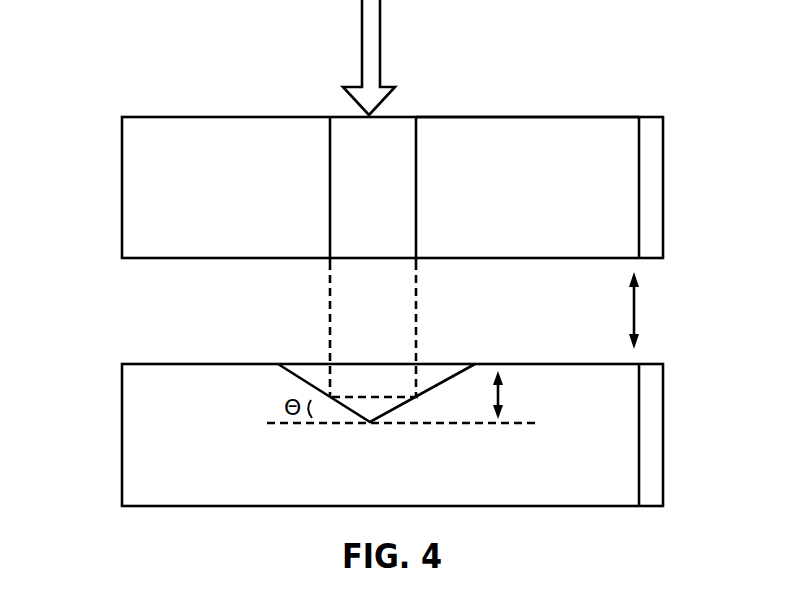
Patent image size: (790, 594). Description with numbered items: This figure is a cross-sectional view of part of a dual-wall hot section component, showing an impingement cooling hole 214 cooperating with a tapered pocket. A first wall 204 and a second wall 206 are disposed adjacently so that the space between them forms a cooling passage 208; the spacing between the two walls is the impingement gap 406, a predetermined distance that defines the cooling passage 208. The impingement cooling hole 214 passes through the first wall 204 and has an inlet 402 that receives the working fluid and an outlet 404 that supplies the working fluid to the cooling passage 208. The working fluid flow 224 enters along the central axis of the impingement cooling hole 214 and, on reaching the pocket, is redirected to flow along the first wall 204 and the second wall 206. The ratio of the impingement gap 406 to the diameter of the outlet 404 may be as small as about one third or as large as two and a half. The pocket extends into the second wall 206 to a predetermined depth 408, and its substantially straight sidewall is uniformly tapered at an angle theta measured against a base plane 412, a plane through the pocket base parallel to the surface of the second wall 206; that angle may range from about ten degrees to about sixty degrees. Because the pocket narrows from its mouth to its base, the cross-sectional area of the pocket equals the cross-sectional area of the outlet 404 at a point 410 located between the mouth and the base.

The first wall 204 is at (122, 196).
The second wall 206 is at (122, 437).
The cooling passage 208 is at (122, 308).
The impingement cooling hole 214 is at (330, 160).
The applied force direction 224 is at (380, 38).
The inlet 402 is at (415, 117).
The outlet 404 is at (388, 258).
The impingement gap 406 is at (636, 310).
The predetermined depth 408 is at (500, 395).
The point 410 is at (405, 388).
The base plane 412 is at (348, 424).